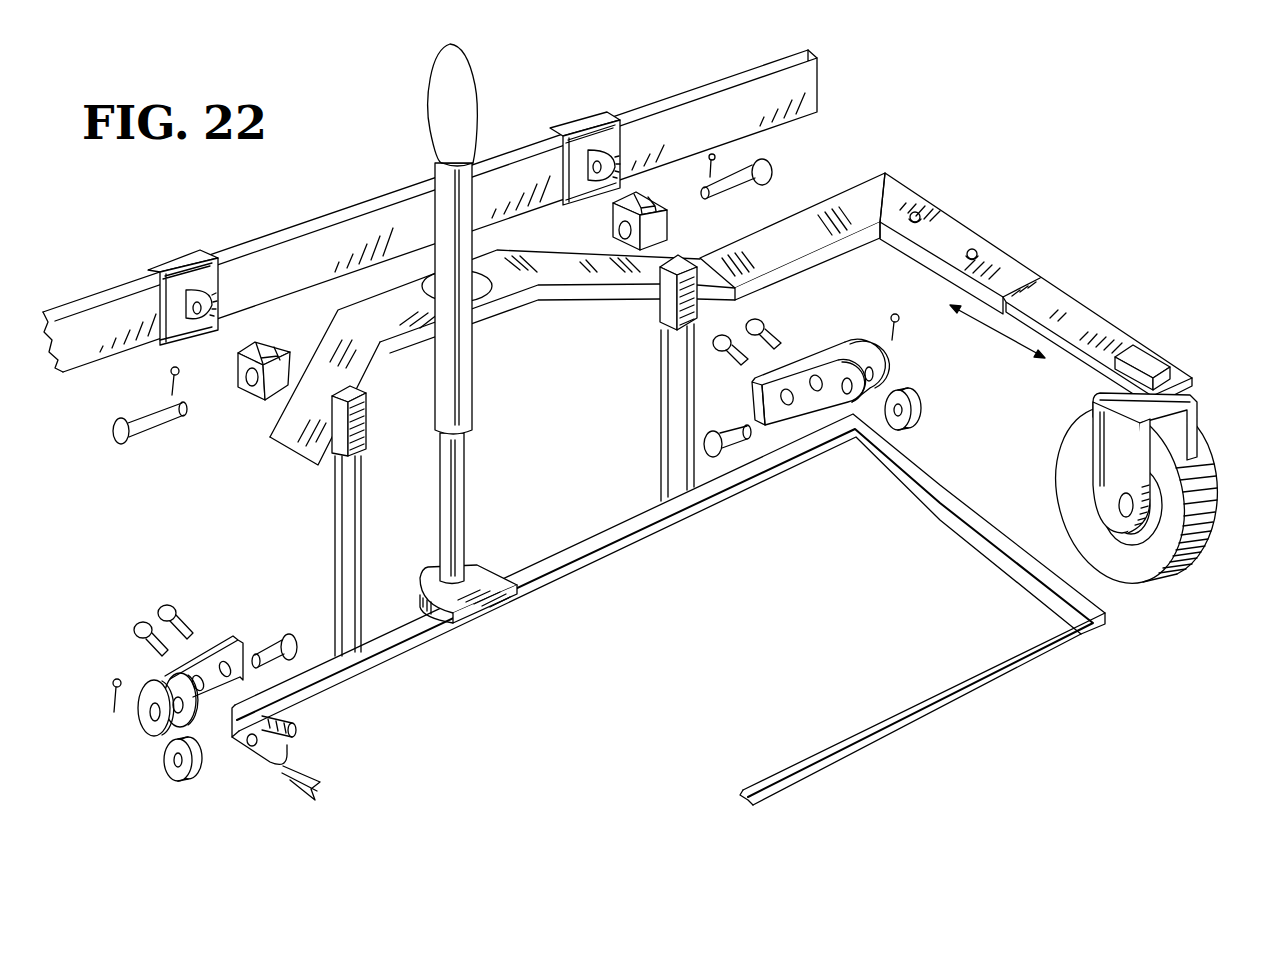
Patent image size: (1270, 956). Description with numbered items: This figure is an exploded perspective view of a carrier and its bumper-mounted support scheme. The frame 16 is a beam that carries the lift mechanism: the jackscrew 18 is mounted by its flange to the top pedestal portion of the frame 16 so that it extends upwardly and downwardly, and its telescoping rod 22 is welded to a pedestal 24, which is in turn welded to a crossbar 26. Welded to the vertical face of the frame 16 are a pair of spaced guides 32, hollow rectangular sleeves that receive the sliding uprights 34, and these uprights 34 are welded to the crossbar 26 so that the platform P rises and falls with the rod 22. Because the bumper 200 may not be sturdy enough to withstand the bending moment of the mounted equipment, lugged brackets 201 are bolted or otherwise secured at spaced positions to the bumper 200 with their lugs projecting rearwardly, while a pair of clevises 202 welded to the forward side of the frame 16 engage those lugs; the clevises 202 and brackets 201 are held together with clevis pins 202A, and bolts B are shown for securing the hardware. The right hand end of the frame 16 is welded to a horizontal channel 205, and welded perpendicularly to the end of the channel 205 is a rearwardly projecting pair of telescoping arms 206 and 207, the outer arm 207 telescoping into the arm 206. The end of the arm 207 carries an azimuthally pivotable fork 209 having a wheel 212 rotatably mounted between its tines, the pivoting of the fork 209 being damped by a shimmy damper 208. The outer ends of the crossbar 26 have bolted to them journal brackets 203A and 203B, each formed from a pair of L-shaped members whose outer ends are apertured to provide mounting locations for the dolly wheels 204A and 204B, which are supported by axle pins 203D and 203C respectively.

The frame 16 is at (305, 448).
The jackscrew 18 is at (437, 92).
The telescoping rod 22 is at (470, 470).
The pedestal 24 is at (478, 562).
The crossbar 26 is at (618, 525).
The guides 32 is at (368, 430).
The sliding uprights 34 is at (366, 553).
The bumper 200 is at (397, 192).
The lugged brackets 201 is at (200, 250).
The clevises 202 is at (280, 345).
The clevis pins 202A is at (180, 414).
The journal bracket 203A is at (140, 690).
The journal bracket 203B is at (840, 350).
The axle pin 203C is at (738, 428).
The axle pin 203D is at (250, 652).
The dolly wheel 204A is at (170, 776).
The dolly wheel 204B is at (925, 415).
The horizontal channel 205 is at (818, 200).
The telescoping arm 206 is at (958, 218).
The outer arm 207 is at (1100, 320).
The shimmy damper 208 is at (1160, 356).
The fork 209 is at (1115, 462).
The wheel 212 is at (1185, 575).
The bolts B is at (750, 335).
The platform P is at (1020, 660).